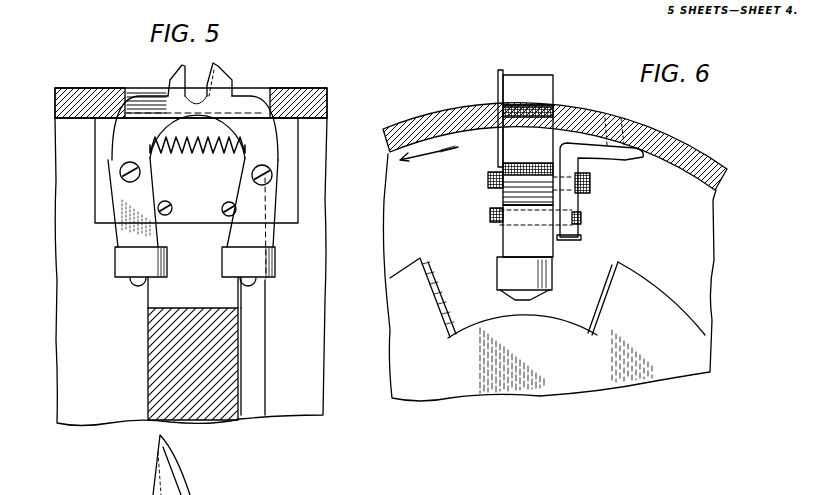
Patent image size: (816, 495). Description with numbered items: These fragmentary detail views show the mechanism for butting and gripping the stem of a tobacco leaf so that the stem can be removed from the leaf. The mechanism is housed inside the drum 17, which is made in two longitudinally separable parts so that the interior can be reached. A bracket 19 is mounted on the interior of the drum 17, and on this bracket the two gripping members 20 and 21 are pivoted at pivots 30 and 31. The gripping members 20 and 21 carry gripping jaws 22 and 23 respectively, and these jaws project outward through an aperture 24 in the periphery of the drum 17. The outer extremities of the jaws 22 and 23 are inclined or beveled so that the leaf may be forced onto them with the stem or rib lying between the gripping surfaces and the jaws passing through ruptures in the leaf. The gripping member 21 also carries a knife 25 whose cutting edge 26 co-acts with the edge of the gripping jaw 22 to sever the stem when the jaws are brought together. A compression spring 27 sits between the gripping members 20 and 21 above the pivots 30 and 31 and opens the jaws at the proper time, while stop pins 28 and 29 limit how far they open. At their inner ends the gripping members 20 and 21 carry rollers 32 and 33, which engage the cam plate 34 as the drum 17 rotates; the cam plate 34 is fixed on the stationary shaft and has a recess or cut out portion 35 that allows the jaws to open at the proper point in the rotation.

In FIG. 5, the drum 17 is at (80, 95).
In FIG. 6, the drum 17 is at (692, 150).
In FIG. 5, the bracket 19 is at (95, 205).
In FIG. 6, the bracket 19 is at (580, 202).
In FIG. 5, the gripping member 20 is at (120, 235).
In FIG. 5, the gripping member 21 is at (275, 237).
In FIG. 6, the gripping member 21 is at (503, 237).
In FIG. 5, the gripping jaw 22 is at (168, 77).
In FIG. 5, the gripping jaw 23 is at (228, 79).
In FIG. 6, the gripping jaw 23 is at (547, 93).
In FIG. 5, the aperture 24 is at (257, 100).
In FIG. 5, the knife 25 is at (237, 113).
In FIG. 6, the knife 25 is at (498, 91).
In FIG. 5, the cutting edge 26 is at (205, 63).
In FIG. 5, the compression spring 27 is at (208, 154).
In FIG. 5, the stop pin 28 is at (164, 201).
In FIG. 5, the stop pin 29 is at (222, 205).
In FIG. 6, the stop pin 29 is at (490, 213).
In FIG. 5, the pivot 30 is at (119, 172).
In FIG. 5, the pivot 31 is at (273, 173).
In FIG. 6, the pivot 31 is at (488, 187).
In FIG. 5, the roller 32 is at (117, 264).
In FIG. 5, the roller 33 is at (277, 267).
In FIG. 5, the cam plate 34 is at (150, 352).
In FIG. 6, the cam plate 34 is at (652, 285).
In FIG. 5, the recess or cut out portion 35 is at (194, 292).
In FIG. 6, the recess or cut out portion 35 is at (475, 317).